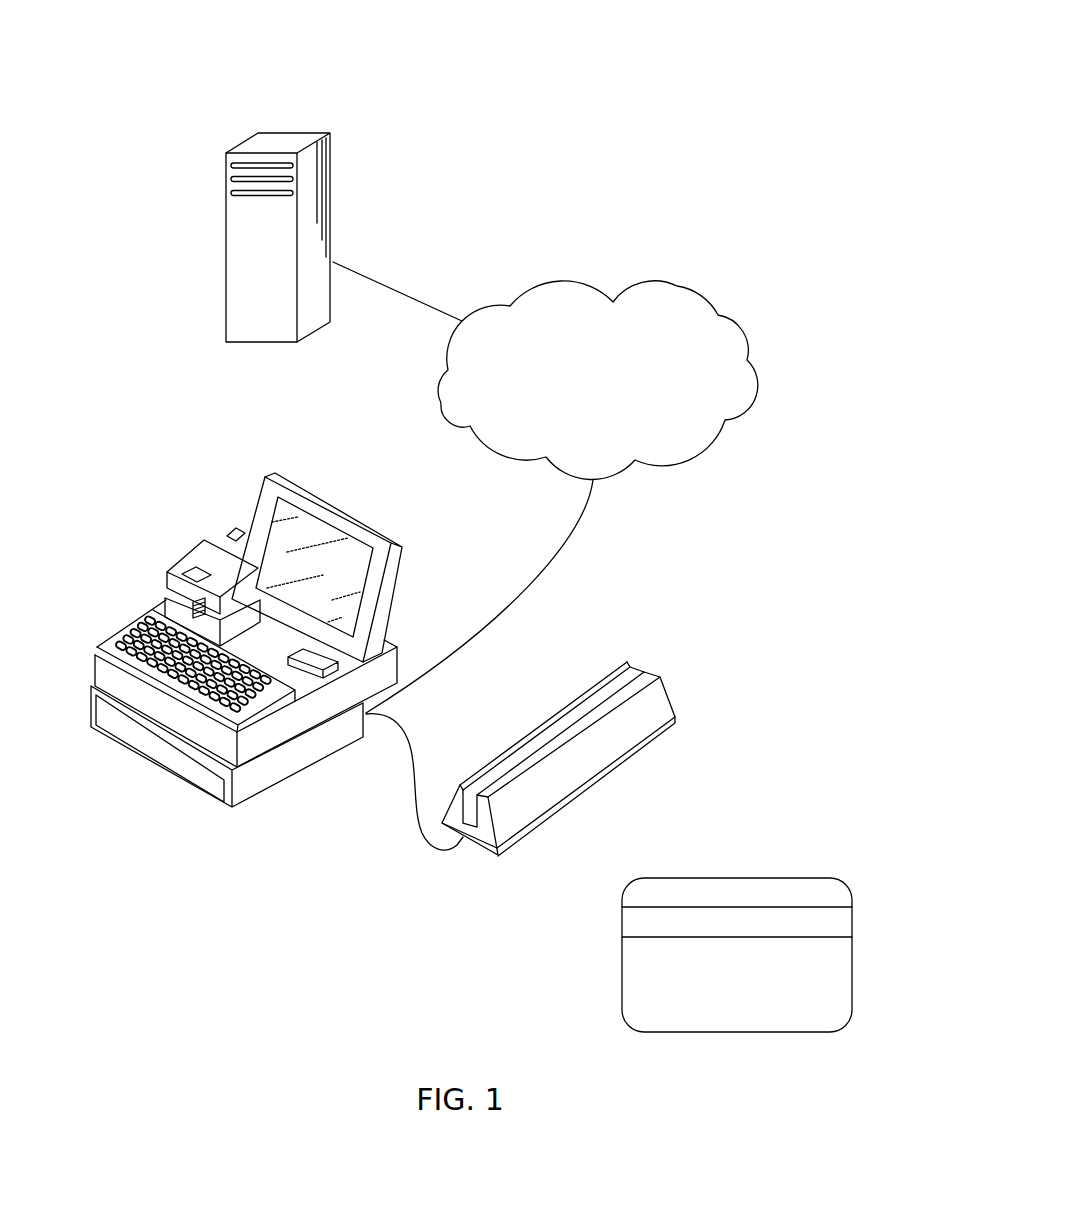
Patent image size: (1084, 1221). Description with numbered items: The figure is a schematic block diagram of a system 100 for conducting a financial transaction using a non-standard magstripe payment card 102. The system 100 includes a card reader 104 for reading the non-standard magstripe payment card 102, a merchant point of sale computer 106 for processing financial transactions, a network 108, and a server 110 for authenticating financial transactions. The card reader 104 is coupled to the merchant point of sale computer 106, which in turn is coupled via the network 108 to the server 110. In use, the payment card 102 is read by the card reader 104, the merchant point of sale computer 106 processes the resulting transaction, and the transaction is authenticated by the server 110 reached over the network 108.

The system 100 is at (775, 80).
The non-standard magstripe payment card 102 is at (737, 878).
The card reader 104 is at (667, 700).
The merchant point of sale computer 106 is at (333, 503).
The network 108 is at (678, 287).
The server 110 is at (332, 172).